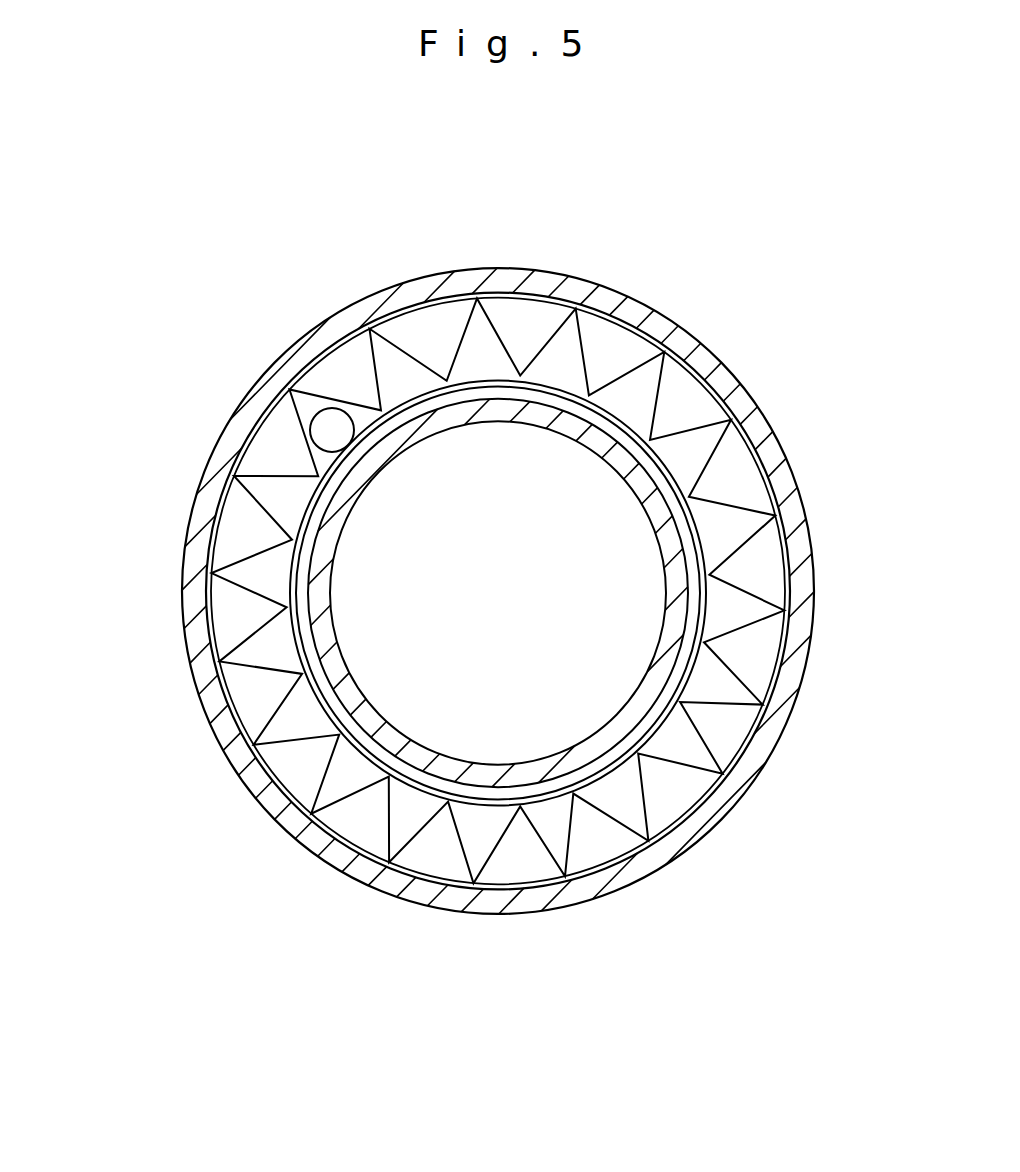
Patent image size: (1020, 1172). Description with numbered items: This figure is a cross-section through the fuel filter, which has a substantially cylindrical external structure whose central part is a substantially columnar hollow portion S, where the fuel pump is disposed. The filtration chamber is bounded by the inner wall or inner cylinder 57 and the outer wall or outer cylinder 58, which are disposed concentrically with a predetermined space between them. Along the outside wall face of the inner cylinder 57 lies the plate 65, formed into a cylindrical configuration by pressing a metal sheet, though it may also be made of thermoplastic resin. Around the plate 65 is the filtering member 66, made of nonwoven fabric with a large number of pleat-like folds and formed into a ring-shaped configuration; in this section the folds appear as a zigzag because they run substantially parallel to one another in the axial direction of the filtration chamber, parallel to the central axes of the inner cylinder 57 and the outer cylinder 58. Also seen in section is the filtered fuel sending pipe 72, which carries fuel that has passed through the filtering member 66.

The outer wall (outer cylinder) 58 is at (635, 300).
The plate 65 is at (718, 740).
The filtering member 66 is at (243, 563).
The filtered fuel sending pipe 72 is at (318, 428).
The inner wall (inner cylinder) 57 is at (521, 410).
The substantially columnar hollow portion S is at (562, 698).